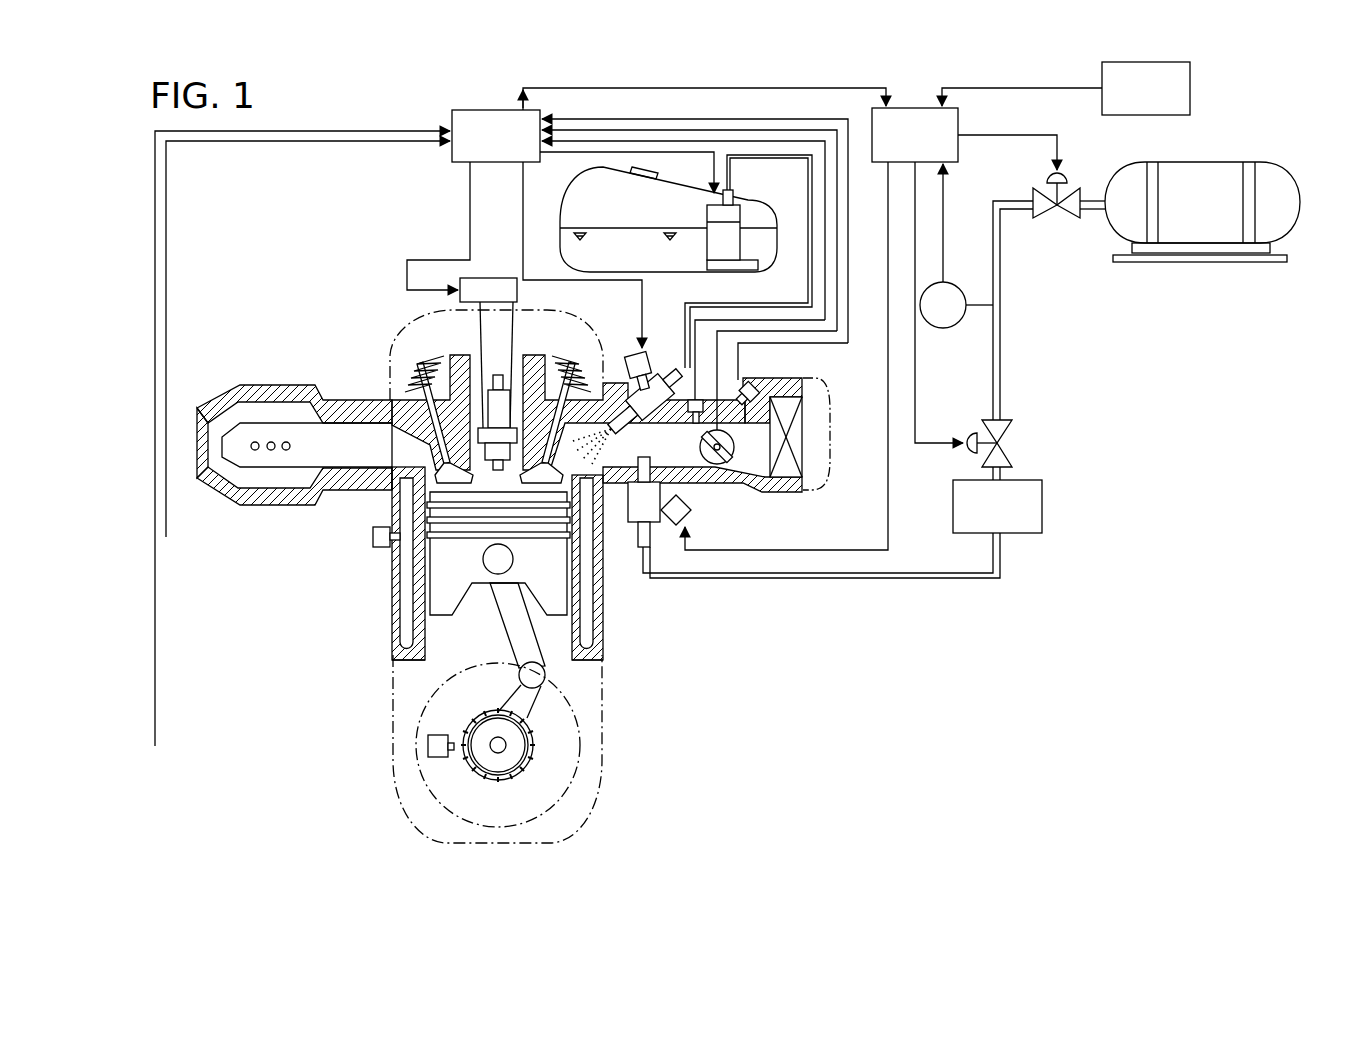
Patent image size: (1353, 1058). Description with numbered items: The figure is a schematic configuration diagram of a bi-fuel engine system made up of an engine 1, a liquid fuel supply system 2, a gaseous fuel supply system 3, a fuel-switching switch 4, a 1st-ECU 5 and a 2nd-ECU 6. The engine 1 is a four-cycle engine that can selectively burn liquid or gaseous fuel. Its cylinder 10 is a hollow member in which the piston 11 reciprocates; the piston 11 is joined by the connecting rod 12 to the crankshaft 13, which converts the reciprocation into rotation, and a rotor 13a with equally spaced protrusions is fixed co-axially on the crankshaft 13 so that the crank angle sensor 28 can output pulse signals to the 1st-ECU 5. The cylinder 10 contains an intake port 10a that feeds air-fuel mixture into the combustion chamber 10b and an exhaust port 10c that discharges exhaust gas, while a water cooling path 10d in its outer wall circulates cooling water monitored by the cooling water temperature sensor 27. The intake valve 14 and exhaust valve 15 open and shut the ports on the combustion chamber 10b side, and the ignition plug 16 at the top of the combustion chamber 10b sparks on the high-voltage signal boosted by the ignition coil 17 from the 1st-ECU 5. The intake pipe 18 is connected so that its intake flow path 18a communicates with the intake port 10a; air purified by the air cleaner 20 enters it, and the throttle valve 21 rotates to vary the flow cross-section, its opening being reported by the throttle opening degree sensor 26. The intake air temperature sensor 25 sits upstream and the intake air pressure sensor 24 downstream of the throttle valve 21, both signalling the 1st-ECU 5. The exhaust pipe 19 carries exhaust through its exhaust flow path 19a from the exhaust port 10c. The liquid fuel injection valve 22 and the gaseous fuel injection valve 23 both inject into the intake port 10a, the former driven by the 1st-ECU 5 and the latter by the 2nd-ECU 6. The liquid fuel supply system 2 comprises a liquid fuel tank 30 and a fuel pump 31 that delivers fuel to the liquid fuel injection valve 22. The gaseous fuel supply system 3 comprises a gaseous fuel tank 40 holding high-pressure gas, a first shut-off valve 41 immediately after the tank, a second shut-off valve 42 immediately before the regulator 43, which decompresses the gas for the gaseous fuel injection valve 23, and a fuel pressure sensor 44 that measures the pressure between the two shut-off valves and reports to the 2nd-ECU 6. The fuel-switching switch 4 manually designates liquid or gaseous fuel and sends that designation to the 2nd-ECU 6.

The engine 1 is at (366, 347).
The liquid fuel supply system 2 is at (668, 250).
The gaseous fuel supply system 3 is at (1110, 452).
The fuel-switching switch 4 is at (1190, 88).
The 1st-ECU 5 is at (462, 164).
The 2nd-ECU 6 is at (950, 164).
The cylinder 10 is at (604, 648).
The intake port 10a is at (597, 520).
The combustion chamber 10b is at (393, 503).
The exhaust port 10c is at (405, 445).
The water cooling path 10d is at (407, 618).
The piston 11 is at (557, 602).
The connecting rod 12 is at (513, 632).
The crankshaft 13 is at (508, 746).
The rotor 13a is at (484, 780).
The intake valve 14 is at (593, 368).
The exhaust valve 15 is at (413, 363).
The ignition plug 16 is at (498, 377).
The ignition coil 17 is at (500, 278).
The intake pipe 18 is at (783, 493).
The intake flow path 18a is at (678, 462).
The exhaust pipe 19 is at (250, 385).
The exhaust flow path 19a is at (297, 455).
The air cleaner 20 is at (800, 430).
The throttle valve 21 is at (713, 458).
The liquid fuel injection valve 22 is at (630, 358).
The gaseous fuel injection valve 23 is at (652, 525).
The intake air pressure sensor 24 is at (690, 414).
The intake air temperature sensor 25 is at (754, 390).
The throttle opening degree sensor 26 is at (735, 462).
The cooling water temperature sensor 27 is at (378, 547).
The crank angle sensor 28 is at (440, 735).
The liquid fuel tank 30 is at (712, 270).
The fuel pump 31 is at (734, 209).
The gaseous fuel tank 40 is at (1190, 162).
The first shut-off valve 41 is at (1058, 218).
The second shut-off valve 42 is at (1012, 445).
The regulator 43 is at (1042, 508).
The fuel pressure sensor 44 is at (959, 284).